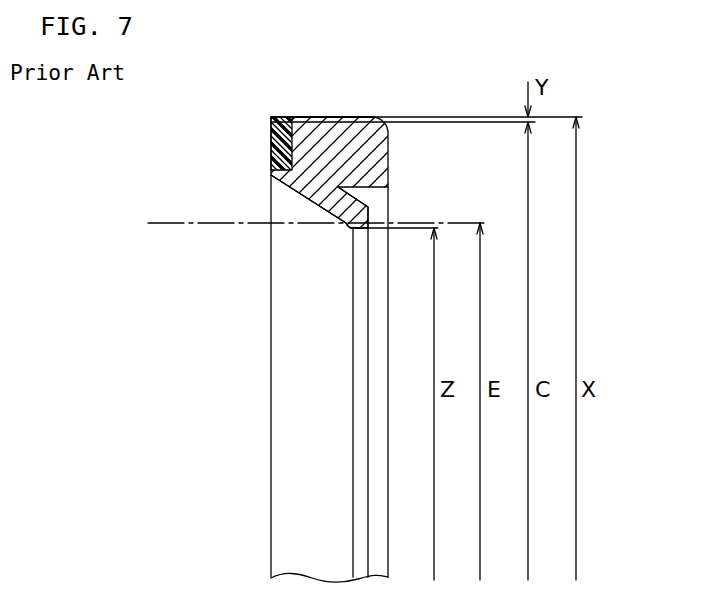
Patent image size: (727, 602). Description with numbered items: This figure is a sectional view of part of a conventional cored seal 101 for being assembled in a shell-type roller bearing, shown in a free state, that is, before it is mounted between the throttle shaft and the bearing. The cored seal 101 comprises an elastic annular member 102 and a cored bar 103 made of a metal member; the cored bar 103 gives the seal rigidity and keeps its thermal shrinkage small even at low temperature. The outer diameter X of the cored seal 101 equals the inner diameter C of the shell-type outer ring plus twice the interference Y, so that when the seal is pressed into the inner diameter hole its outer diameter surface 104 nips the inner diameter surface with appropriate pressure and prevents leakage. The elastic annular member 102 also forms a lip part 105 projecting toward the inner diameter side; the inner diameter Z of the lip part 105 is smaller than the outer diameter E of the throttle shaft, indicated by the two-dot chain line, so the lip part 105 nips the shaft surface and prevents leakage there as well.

The cored seal 101 is at (335, 153).
The elastic annular member 102 is at (352, 148).
The cored bar 103 is at (270, 143).
The outer diameter surface 104 is at (312, 116).
The lip part 105 is at (346, 213).